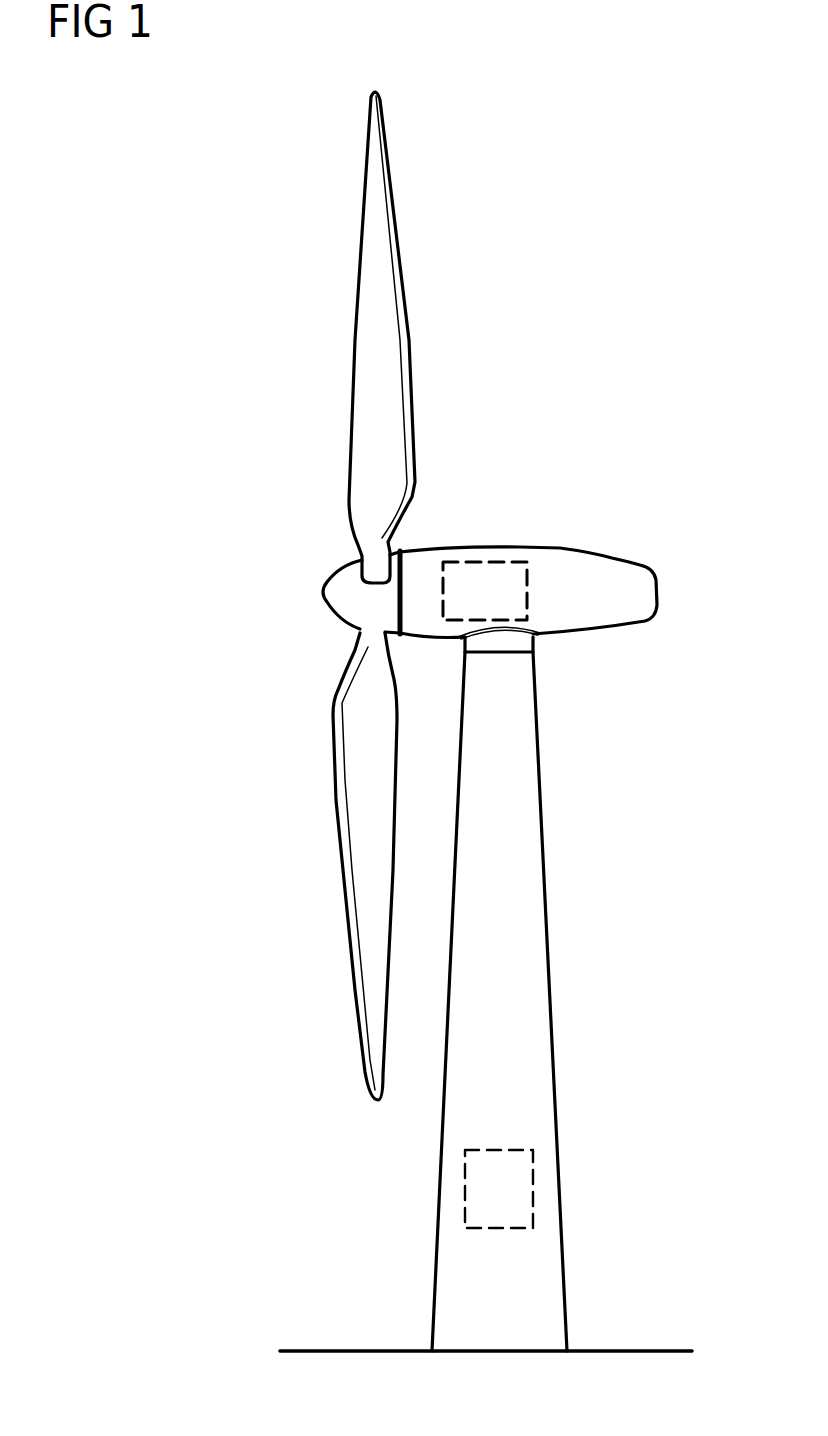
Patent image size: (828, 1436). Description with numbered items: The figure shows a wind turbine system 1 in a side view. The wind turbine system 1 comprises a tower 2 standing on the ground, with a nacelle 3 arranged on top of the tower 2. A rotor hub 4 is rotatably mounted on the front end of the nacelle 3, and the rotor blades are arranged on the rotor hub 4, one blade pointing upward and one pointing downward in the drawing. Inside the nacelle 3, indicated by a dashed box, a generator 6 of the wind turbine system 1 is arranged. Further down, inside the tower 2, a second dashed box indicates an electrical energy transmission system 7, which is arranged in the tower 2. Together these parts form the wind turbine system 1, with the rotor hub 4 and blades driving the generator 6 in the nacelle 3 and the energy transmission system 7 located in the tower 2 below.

The wind turbine system 1 is at (617, 344).
The tower 2 is at (541, 827).
The nacelle 3 is at (606, 557).
The rotor hub 4 is at (322, 591).
The generator 6 is at (477, 560).
The electrical energy transmission system 7 is at (498, 1150).